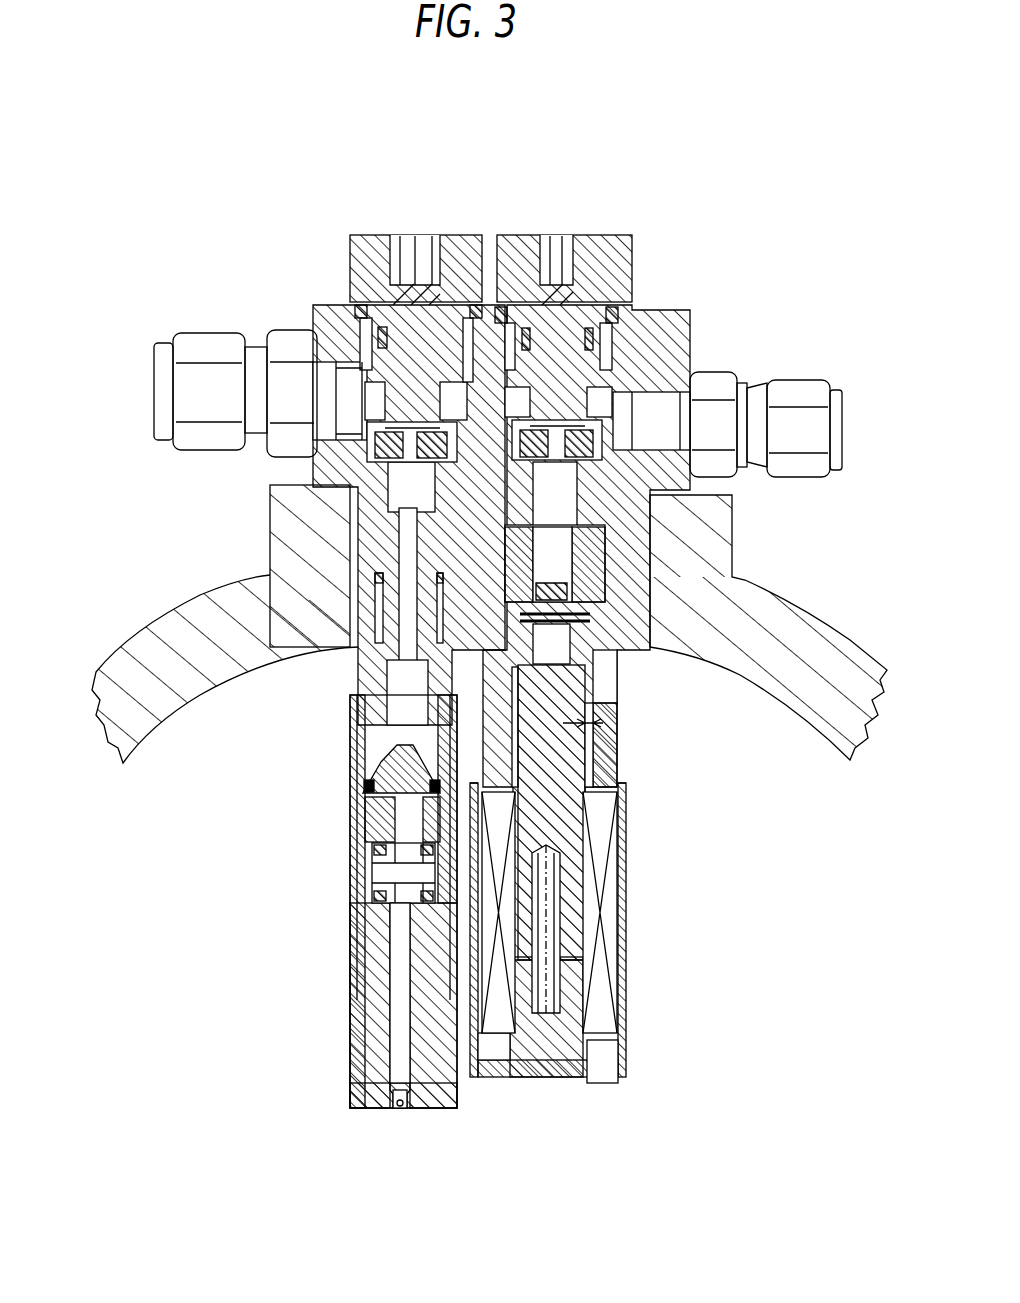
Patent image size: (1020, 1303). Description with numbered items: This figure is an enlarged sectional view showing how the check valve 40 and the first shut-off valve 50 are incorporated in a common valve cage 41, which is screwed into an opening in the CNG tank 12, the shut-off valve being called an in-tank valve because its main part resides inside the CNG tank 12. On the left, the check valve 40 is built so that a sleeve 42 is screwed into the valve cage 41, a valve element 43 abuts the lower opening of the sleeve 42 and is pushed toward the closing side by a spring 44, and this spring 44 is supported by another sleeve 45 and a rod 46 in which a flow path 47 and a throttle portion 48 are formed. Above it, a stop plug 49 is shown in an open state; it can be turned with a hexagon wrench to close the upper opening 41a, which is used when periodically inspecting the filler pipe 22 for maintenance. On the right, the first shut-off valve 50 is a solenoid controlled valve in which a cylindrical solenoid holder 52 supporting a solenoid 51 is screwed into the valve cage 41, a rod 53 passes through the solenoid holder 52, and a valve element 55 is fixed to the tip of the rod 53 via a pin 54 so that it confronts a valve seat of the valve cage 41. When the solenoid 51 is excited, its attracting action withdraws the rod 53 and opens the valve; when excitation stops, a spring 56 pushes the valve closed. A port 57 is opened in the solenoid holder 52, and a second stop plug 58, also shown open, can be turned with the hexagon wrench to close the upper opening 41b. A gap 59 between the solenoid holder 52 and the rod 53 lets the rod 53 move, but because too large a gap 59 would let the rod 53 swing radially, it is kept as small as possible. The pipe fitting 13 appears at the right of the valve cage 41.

The CNG tank 12 is at (197, 595).
The pipe fitting 13 is at (842, 405).
The filler pipe 22 is at (154, 388).
The check valve 40 is at (481, 165).
The valve cage 41 is at (500, 568).
The upper opening 41a is at (383, 470).
The upper opening 41b is at (590, 465).
The sleeve 42 is at (357, 675).
The valve element 43 is at (353, 752).
The spring 44 is at (370, 878).
The sleeve 45 is at (352, 910).
The rod 46 is at (345, 1043).
The flow path 47 is at (393, 1003).
The throttle portion 48 is at (400, 1110).
The stop plug 49 is at (392, 238).
The first shut-off valve 50 is at (495, 165).
The solenoid 51 is at (605, 905).
The solenoid holder 52 is at (630, 822).
The rod 53 is at (555, 775).
The pin 54 is at (520, 617).
The valve element 55 is at (515, 540).
The spring 56 is at (565, 972).
The port 57 is at (620, 683).
The stop plug 58 is at (578, 240).
The gap 59 is at (605, 725).